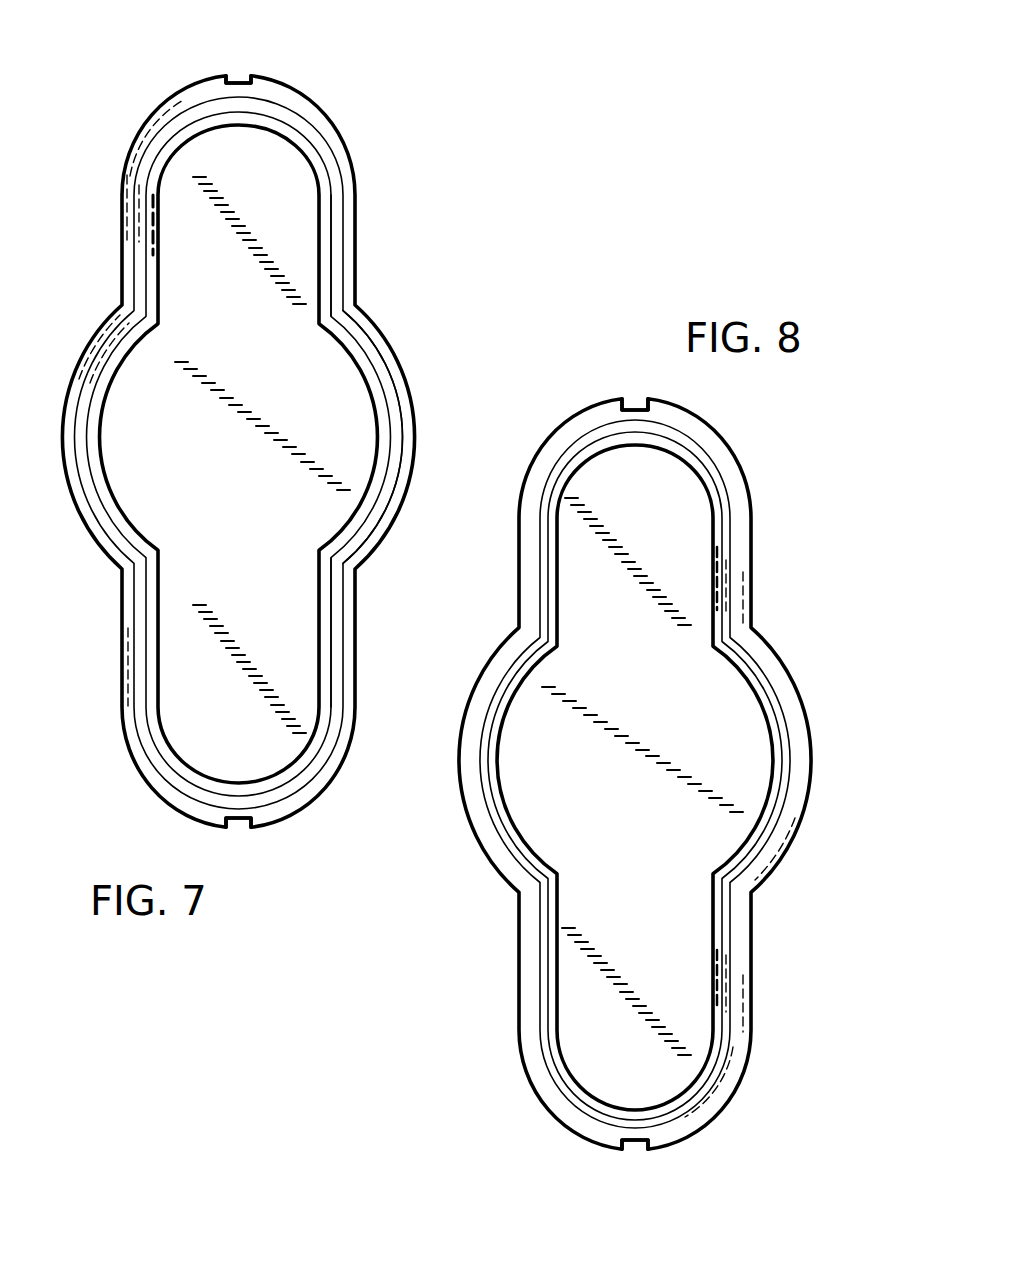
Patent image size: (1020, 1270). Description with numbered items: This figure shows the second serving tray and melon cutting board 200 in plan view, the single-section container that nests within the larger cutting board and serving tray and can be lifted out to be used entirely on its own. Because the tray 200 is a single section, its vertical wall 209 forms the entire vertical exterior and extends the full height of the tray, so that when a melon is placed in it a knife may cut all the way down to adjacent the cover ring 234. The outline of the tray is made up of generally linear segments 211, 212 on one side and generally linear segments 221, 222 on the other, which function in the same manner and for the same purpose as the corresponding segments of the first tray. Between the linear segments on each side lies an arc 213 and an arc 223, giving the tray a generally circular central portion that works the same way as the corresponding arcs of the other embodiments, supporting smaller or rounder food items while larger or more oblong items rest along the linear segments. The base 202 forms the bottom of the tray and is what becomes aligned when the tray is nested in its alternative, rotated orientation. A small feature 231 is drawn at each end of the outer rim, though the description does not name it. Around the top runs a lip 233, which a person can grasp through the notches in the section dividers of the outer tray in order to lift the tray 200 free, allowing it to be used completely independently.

In FIG. 7, the second serving tray and melon cutting board 200 is at (372, 167).
In FIG. 8, the second serving tray and melon cutting board 200 is at (508, 952).
In FIG. 7, the base 202 is at (232, 448).
In FIG. 8, the base 202 is at (642, 776).
In FIG. 7, the vertical wall 209 is at (230, 787).
In FIG. 8, the vertical wall 209 is at (687, 438).
In FIG. 7, the generally linear segment 211 is at (337, 188).
In FIG. 7, the generally linear segment 212 is at (338, 653).
In FIG. 7, the arc 213 is at (372, 345).
In FIG. 7, the generally linear segment 221 is at (138, 263).
In FIG. 7, the generally linear segment 222 is at (138, 640).
In FIG. 7, the arc 223 is at (110, 540).
In FIG. 7, the notch 231 is at (237, 77).
In FIG. 8, the notch 231 is at (630, 402).
In FIG. 7, the lip 233 is at (333, 129).
In FIG. 8, the lip 233 is at (727, 454).
In FIG. 7, the cover ring 234 is at (293, 110).